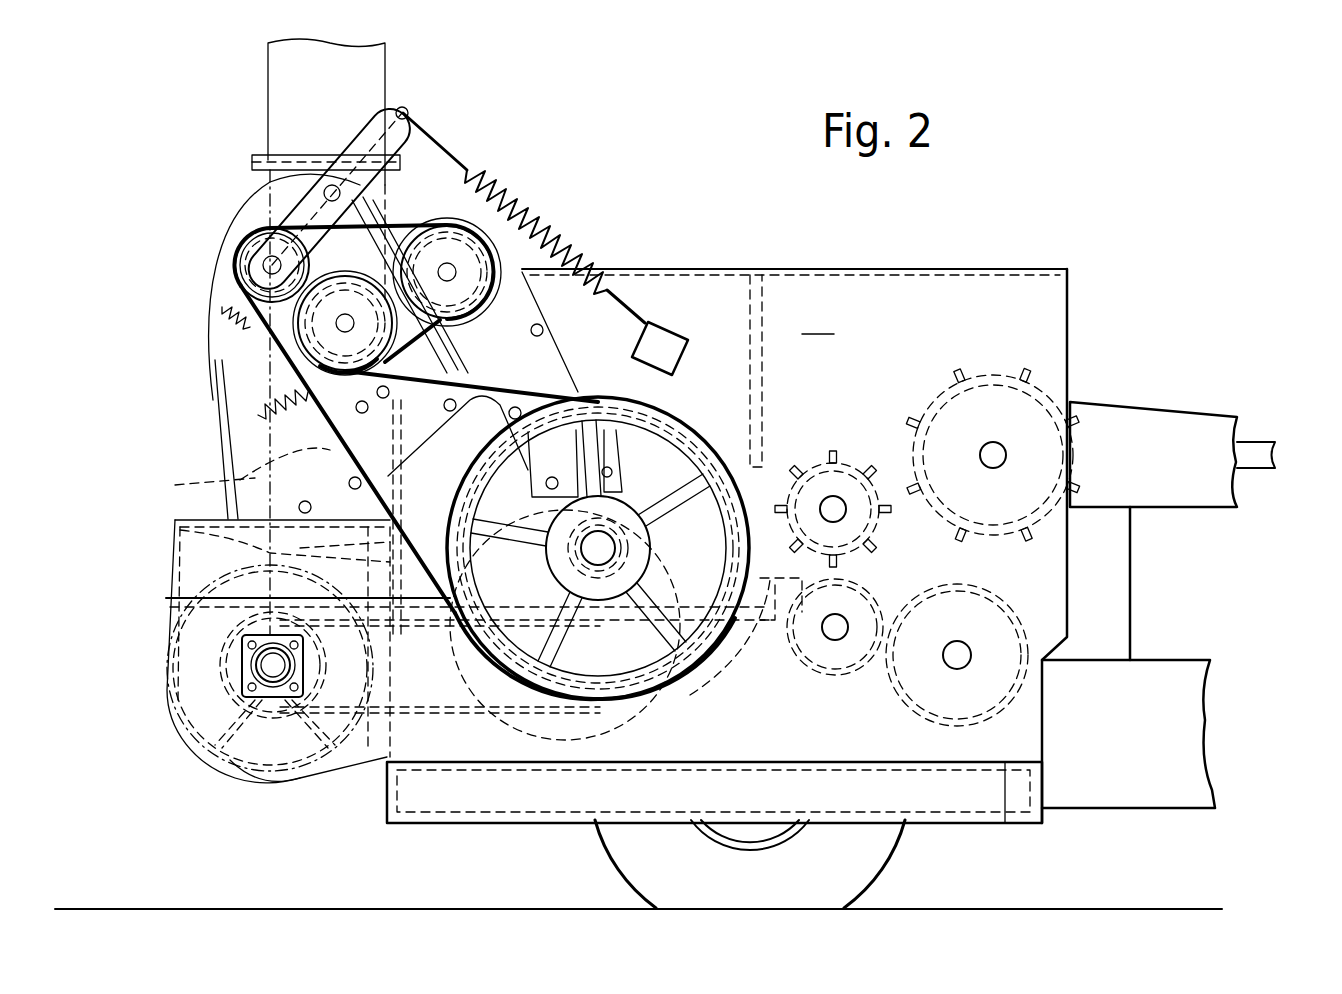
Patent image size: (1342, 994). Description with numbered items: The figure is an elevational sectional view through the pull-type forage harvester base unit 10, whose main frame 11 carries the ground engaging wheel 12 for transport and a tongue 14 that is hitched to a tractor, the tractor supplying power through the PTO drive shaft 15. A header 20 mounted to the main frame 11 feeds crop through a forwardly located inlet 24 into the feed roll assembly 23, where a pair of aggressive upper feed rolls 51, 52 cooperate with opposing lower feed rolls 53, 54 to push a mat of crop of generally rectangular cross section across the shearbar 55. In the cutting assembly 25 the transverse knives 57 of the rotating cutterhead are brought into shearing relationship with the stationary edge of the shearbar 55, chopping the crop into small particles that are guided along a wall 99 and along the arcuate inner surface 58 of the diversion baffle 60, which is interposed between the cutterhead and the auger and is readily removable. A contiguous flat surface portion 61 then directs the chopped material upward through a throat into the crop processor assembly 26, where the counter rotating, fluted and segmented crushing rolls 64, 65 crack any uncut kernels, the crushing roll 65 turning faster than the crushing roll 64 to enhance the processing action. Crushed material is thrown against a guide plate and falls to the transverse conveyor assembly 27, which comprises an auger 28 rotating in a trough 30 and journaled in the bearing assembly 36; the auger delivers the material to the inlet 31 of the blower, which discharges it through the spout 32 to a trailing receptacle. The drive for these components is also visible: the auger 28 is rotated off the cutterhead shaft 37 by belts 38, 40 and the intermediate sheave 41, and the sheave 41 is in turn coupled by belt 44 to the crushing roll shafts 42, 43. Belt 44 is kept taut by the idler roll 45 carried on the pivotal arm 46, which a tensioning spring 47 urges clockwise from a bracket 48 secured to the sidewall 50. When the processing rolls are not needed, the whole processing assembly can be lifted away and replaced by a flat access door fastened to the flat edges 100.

The pull-type forage harvester base unit 10 is at (665, 158).
The main frame 11 is at (1000, 822).
The ground engaging wheel 12 is at (865, 860).
The tongue 14 is at (1150, 410).
The PTO drive shaft 15 is at (1255, 440).
The header 20 is at (1205, 642).
The feed roll assembly 23 is at (907, 350).
The inlet 24 is at (1030, 577).
The cutting assembly 25 is at (690, 378).
The crop processor assembly 26 is at (423, 188).
The transverse conveyor assembly 27 is at (150, 661).
The auger 28 is at (212, 712).
The trough 30 is at (250, 790).
The inlet 31 is at (250, 528).
The spout 32 is at (270, 118).
The bearing assembly 36 is at (273, 710).
The cutterhead shaft 37 is at (598, 548).
The belt 38 is at (640, 585).
The belt 40 is at (447, 695).
The intermediate sheave 41 is at (645, 708).
The crushing roll shaft 42 is at (470, 262).
The crushing roll shaft 43 is at (340, 325).
The belt 44 is at (235, 450).
The idler roll 45 is at (245, 245).
The arm 46 is at (380, 145).
The tensioning spring 47 is at (580, 250).
The bracket 48 is at (665, 335).
The sidewall 50 is at (818, 321).
The upper feed roll 51 is at (820, 450).
The upper feed roll 52 is at (998, 372).
The lower feed roll 53 is at (828, 675).
The lower feed roll 54 is at (935, 715).
The shearbar 55 is at (778, 630).
The knives 57 is at (625, 385).
The arcuate inner surface 58 is at (510, 702).
The diversion baffle 60 is at (452, 658).
The flat surface portion 61 is at (425, 472).
The crushing roll 64 is at (250, 383).
The crushing roll 65 is at (500, 190).
The wall 99 is at (722, 702).
The flat edges 100 is at (242, 474).